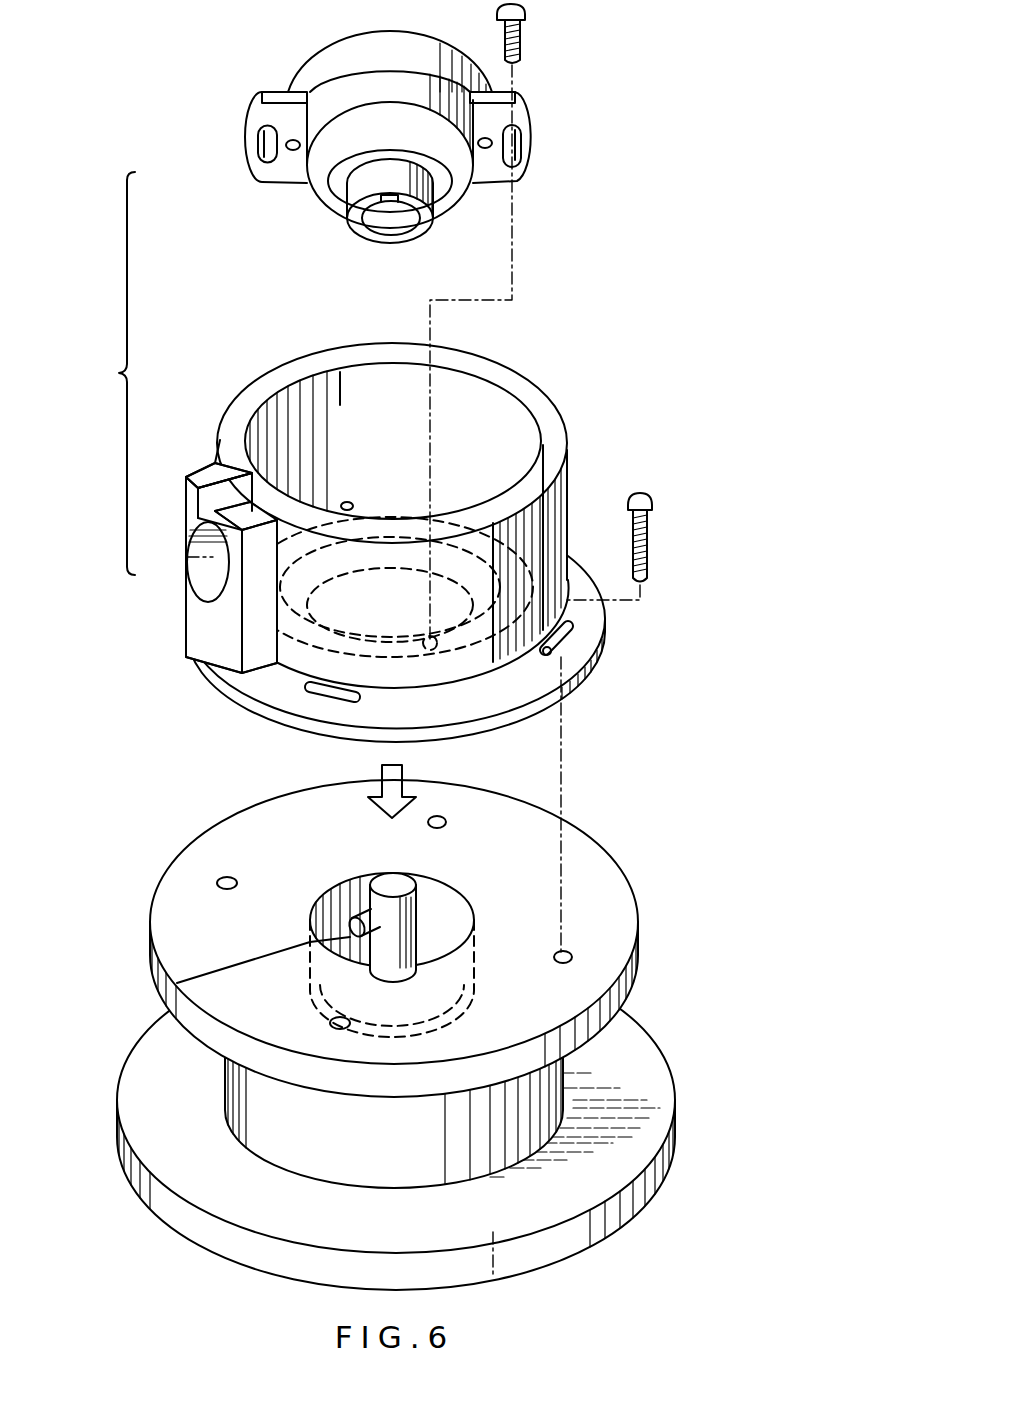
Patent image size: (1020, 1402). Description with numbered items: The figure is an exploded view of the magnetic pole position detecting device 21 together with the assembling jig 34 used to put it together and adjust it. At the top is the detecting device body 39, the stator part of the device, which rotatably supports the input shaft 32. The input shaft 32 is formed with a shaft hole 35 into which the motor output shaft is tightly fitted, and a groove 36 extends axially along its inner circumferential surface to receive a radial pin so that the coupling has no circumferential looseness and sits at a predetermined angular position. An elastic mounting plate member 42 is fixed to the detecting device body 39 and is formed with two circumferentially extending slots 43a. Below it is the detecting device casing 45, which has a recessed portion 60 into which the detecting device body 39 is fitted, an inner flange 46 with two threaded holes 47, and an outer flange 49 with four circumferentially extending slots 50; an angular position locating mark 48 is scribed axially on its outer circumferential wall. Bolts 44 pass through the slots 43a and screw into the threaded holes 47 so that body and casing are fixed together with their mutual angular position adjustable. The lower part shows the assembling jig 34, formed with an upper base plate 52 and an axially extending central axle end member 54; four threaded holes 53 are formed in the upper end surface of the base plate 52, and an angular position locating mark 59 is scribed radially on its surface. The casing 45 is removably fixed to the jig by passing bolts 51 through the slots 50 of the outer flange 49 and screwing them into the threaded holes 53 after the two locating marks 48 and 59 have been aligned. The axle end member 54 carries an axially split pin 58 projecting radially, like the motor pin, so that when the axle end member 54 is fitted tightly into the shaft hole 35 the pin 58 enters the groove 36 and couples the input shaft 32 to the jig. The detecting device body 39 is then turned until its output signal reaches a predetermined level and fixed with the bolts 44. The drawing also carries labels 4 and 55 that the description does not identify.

The notch 4 is at (205, 470).
The magnetic pole position detecting device 21 is at (100, 373).
The input shaft 32 is at (358, 237).
The assembling jig 34 is at (179, 829).
The shaft hole 35 is at (415, 225).
The groove 36 is at (388, 206).
The detecting device body 39 is at (305, 67).
The elastic mounting plate member 42 is at (267, 178).
The circumferentially extending slots 43a is at (250, 140).
The bolts 44 is at (528, 50).
The detecting device casing 45 is at (565, 440).
The inner flange 46 is at (445, 505).
The threaded holes 47 is at (348, 500).
The angular position locating mark 48 is at (220, 670).
The outer flange 49 is at (582, 540).
The circumferentially extending slots 50 is at (541, 675).
The bolts 51 is at (652, 546).
The upper base plate 52 is at (615, 875).
The threaded holes 53 is at (560, 962).
The axle end member 54 is at (393, 880).
The recess 55 is at (436, 908).
The axially split pin 58 is at (320, 945).
The angular position locating mark 59 is at (218, 970).
The recessed portion 60 is at (343, 407).